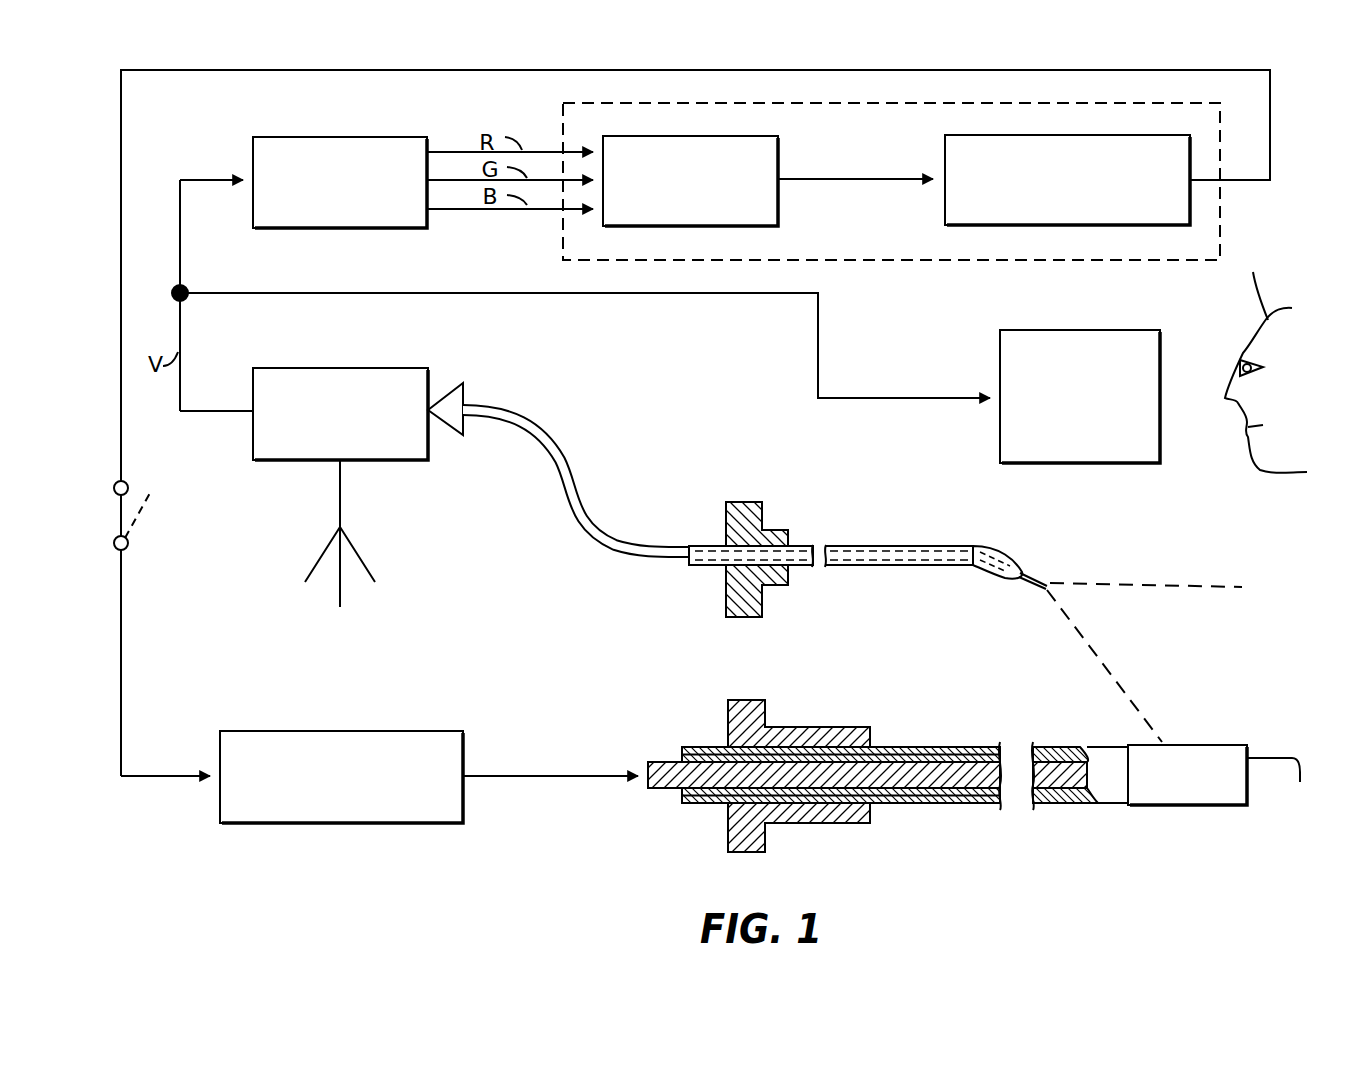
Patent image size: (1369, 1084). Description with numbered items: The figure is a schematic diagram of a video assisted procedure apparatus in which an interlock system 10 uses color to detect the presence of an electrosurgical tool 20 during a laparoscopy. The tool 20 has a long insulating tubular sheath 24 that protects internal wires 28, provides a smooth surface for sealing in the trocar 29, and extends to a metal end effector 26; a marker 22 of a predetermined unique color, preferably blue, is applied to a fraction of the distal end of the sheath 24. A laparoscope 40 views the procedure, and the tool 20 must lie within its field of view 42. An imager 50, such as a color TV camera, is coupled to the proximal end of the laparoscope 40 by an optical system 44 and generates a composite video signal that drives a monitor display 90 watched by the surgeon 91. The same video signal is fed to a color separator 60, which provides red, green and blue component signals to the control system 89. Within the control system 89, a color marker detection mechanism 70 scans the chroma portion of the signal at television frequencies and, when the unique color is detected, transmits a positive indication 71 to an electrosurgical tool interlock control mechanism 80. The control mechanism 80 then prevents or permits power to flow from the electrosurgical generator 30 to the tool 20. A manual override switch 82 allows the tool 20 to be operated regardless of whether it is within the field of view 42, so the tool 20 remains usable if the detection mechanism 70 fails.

The interlock system 10 is at (1360, 612).
The electrosurgical tool 20 is at (986, 769).
The marker 22 is at (1190, 806).
The tubular sheath 24 is at (925, 805).
The end effector 26 is at (1268, 757).
The internal wires 28 is at (663, 792).
The trocar 29 is at (799, 727).
The electrosurgical generator 30 is at (312, 731).
The laparoscope 40 is at (858, 578).
The field of view 42 is at (1133, 583).
The optical system 44 is at (527, 422).
The imager 50 is at (380, 368).
The color separator 60 is at (348, 137).
The color marker detection mechanism 70 is at (750, 136).
The indication 71 is at (818, 180).
The electrosurgical tool interlock control mechanism 80 is at (1003, 134).
The manual override switch 82 is at (120, 518).
The control system 89 is at (562, 103).
The monitor display 90 is at (1083, 330).
The surgeon 91 is at (1253, 272).